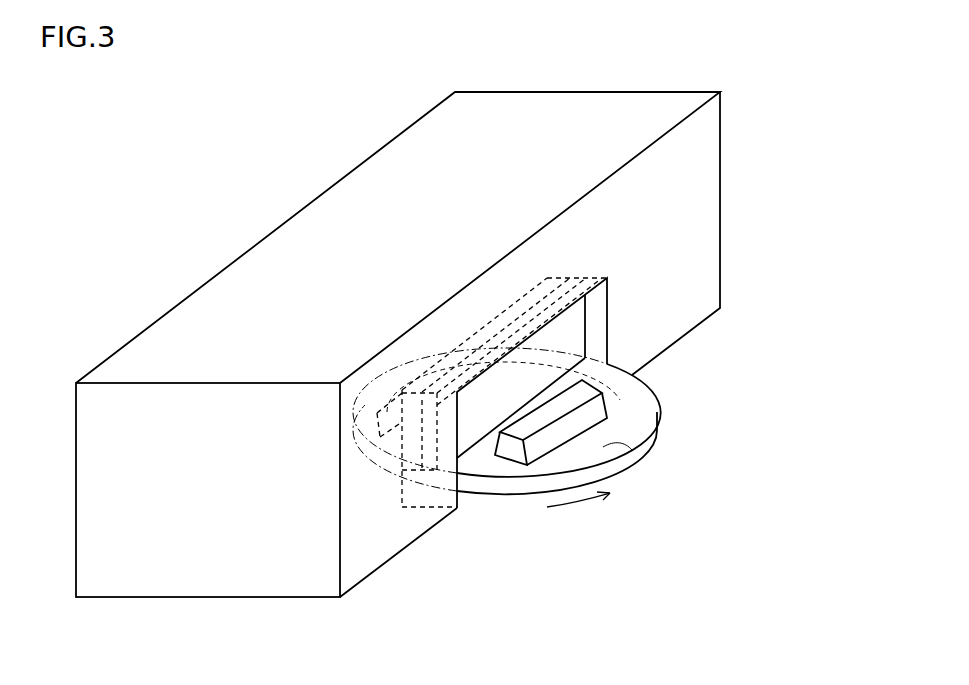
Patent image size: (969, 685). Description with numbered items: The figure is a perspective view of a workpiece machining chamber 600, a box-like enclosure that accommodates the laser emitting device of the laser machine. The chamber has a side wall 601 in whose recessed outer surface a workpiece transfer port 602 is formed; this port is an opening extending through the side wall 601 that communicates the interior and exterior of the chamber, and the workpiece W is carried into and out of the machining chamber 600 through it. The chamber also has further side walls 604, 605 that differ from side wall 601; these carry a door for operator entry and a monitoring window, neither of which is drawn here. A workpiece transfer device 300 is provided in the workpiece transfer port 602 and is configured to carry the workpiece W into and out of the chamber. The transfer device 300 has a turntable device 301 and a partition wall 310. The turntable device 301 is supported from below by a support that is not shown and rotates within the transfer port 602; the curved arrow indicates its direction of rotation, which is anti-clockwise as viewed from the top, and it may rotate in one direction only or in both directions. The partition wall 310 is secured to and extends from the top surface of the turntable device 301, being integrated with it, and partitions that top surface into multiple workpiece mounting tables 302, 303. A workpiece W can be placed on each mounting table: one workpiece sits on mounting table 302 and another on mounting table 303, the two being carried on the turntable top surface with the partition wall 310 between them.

The workpiece machining chamber 600 is at (429, 336).
The side wall 601 is at (703, 145).
The workpiece transfer port 602 is at (560, 313).
The side wall 604 is at (546, 91).
The side wall 605 is at (200, 538).
The workpiece transfer device 300 is at (547, 434).
The turntable device 301 is at (640, 448).
The workpiece mounting table 302 is at (377, 413).
The workpiece mounting table 303 is at (603, 447).
The partition wall 310 is at (535, 362).
The workpiece W is at (540, 450).